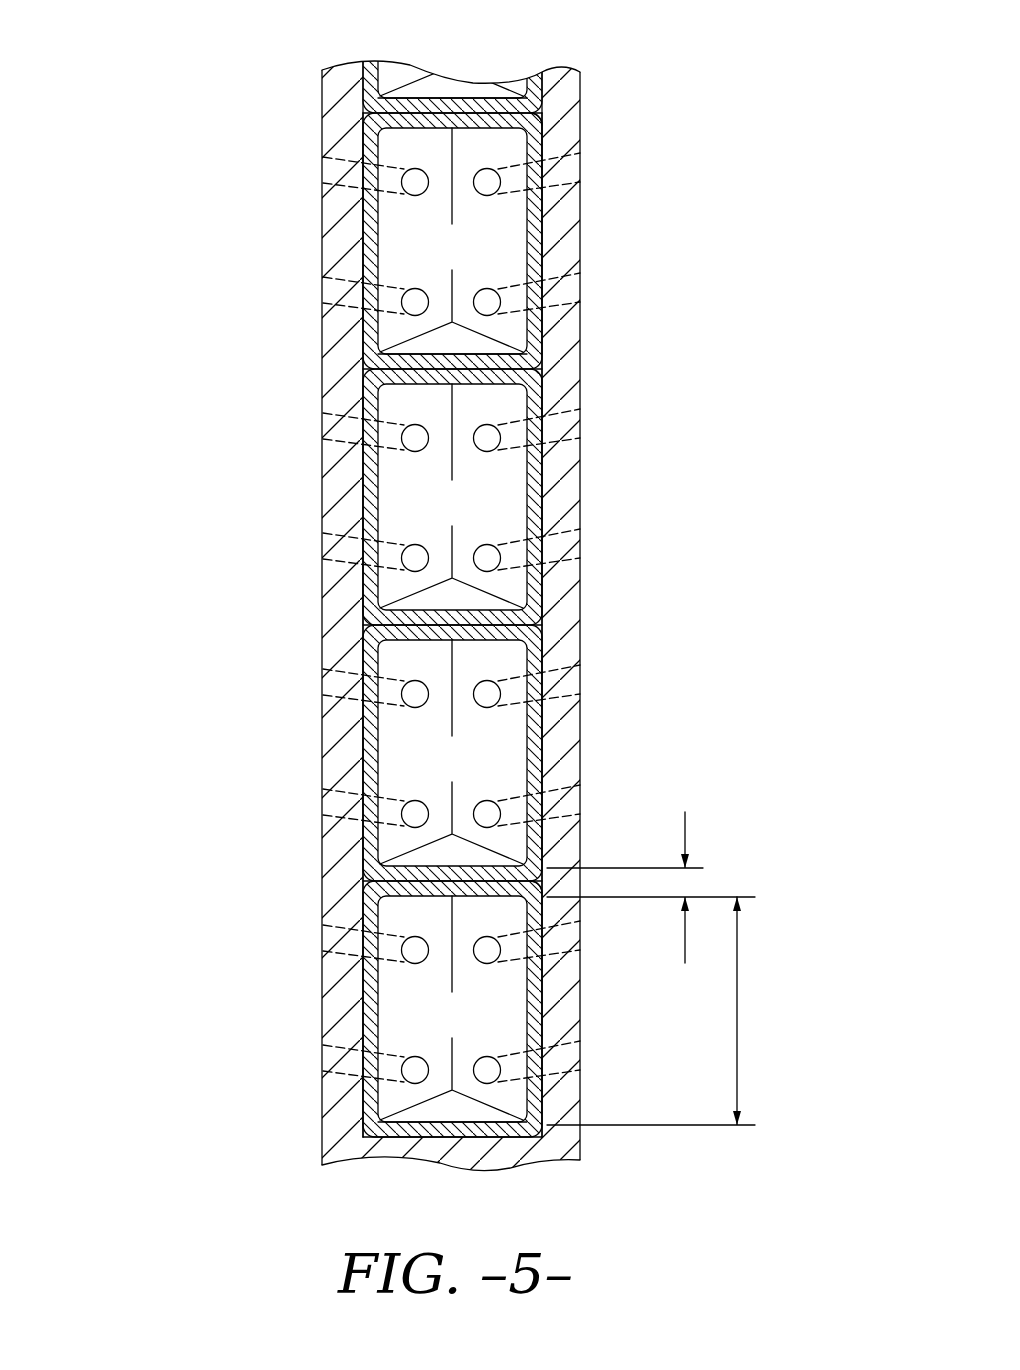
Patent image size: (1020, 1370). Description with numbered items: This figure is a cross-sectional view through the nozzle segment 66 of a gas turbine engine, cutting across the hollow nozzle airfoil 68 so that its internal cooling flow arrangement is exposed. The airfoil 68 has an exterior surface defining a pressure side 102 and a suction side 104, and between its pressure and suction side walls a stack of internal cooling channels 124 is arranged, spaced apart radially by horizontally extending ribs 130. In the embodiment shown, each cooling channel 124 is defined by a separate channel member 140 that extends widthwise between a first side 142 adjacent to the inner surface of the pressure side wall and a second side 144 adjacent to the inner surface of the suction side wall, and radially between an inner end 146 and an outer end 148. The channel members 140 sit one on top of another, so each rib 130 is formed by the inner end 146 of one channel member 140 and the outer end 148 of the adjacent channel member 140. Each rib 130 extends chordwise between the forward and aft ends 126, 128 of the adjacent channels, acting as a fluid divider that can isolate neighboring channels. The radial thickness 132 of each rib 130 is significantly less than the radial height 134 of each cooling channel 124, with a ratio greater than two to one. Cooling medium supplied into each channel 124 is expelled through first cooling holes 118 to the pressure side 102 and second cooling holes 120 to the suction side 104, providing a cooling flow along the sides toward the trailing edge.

The nozzle segment 66 is at (192, 165).
The nozzle airfoil 68 is at (510, 606).
The pressure side 102 is at (580, 455).
The suction side 104 is at (320, 512).
The first cooling hole 118 is at (580, 202).
The second cooling hole 120 is at (320, 310).
The internal cooling channel 124 is at (475, 258).
The forward end 126 is at (427, 1130).
The aft end 128 is at (448, 718).
The rib 130 is at (349, 114).
The radial thickness 132 is at (688, 828).
The radial height 134 is at (738, 1015).
The channel member 140 is at (372, 70).
The first side 142 is at (541, 250).
The second side 144 is at (358, 240).
The inner end 146 is at (540, 107).
The outer end 148 is at (542, 137).